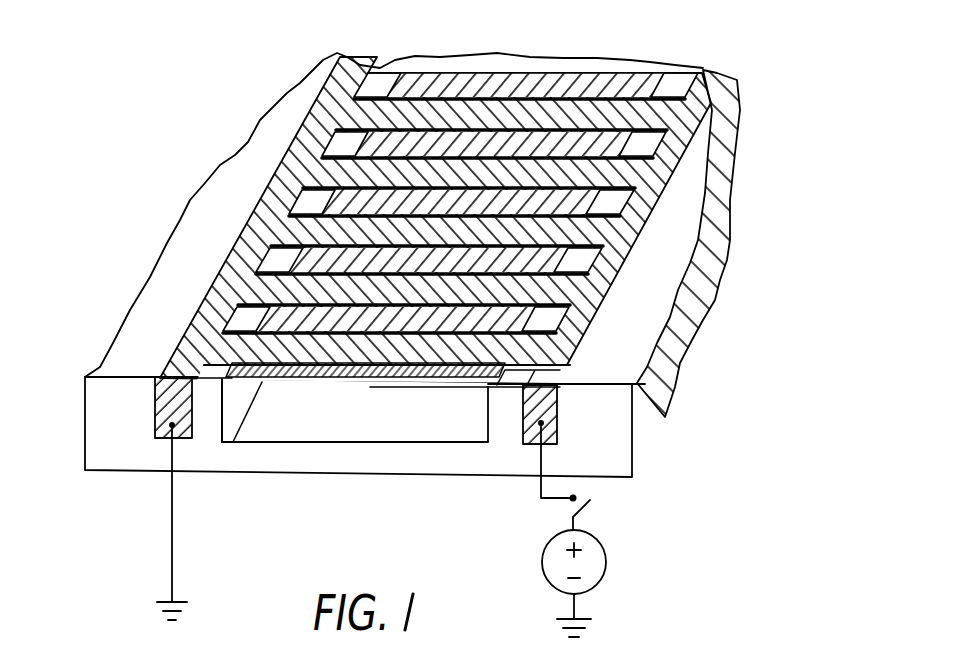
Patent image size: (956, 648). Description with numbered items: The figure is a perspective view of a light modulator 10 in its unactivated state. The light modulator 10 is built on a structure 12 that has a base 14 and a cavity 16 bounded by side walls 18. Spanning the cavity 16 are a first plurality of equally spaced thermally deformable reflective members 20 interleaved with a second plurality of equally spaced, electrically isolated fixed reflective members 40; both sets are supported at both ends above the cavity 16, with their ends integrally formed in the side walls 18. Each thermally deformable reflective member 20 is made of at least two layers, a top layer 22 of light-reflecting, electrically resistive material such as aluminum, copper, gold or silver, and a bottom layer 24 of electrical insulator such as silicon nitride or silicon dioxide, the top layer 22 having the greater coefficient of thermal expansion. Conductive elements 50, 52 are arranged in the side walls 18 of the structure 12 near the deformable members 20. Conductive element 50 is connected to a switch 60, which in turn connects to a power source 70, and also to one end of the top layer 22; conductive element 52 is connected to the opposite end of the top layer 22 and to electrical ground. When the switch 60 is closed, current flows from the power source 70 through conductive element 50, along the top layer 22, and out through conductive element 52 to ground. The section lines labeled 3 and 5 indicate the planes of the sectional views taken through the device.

The light modulator 10 is at (237, 97).
The structure 12 is at (114, 362).
The base 14 is at (266, 424).
The cavity 16 is at (318, 412).
The side walls 18 is at (233, 417).
The thermally deformable reflective members 20 is at (507, 352).
The top layer 22 is at (452, 387).
The bottom layer 24 is at (395, 387).
The fixed reflective members 40 is at (630, 108).
The conductive element 50 is at (560, 410).
The conductive element 52 is at (165, 403).
The switch 60 is at (589, 511).
The power source 70 is at (598, 562).
The section line 3- 3 is at (543, 82).
The section line 5- 5 is at (772, 196).